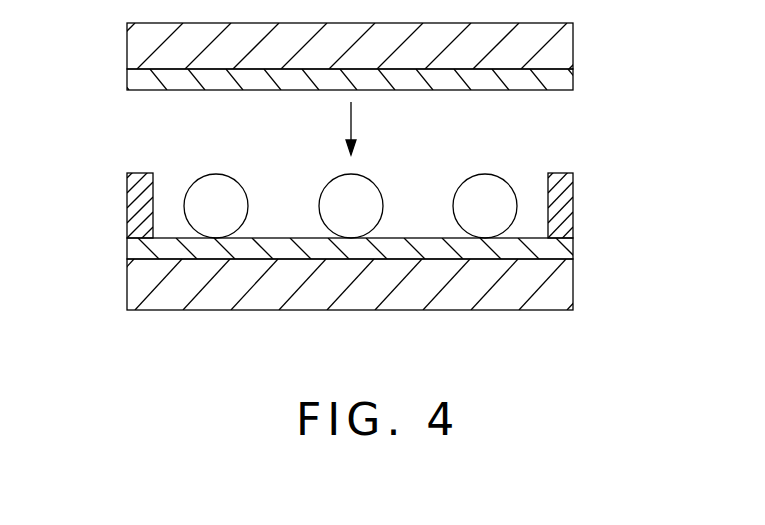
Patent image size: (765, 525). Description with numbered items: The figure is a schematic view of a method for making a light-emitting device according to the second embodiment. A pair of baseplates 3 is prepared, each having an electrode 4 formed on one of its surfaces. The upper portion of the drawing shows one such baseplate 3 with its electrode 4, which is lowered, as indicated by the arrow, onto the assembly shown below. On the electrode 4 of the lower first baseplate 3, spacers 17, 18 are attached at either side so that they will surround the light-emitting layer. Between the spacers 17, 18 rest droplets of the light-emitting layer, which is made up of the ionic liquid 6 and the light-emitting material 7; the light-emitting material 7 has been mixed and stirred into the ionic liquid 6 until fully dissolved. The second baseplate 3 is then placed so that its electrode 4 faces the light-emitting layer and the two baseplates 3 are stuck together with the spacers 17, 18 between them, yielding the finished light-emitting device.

The baseplate 3 is at (565, 43).
The electrode 4 is at (565, 82).
The ionic liquid 6 is at (386, 179).
The light-emitting material 7 is at (487, 182).
The spacer 17 is at (565, 198).
The spacer 18 is at (137, 200).